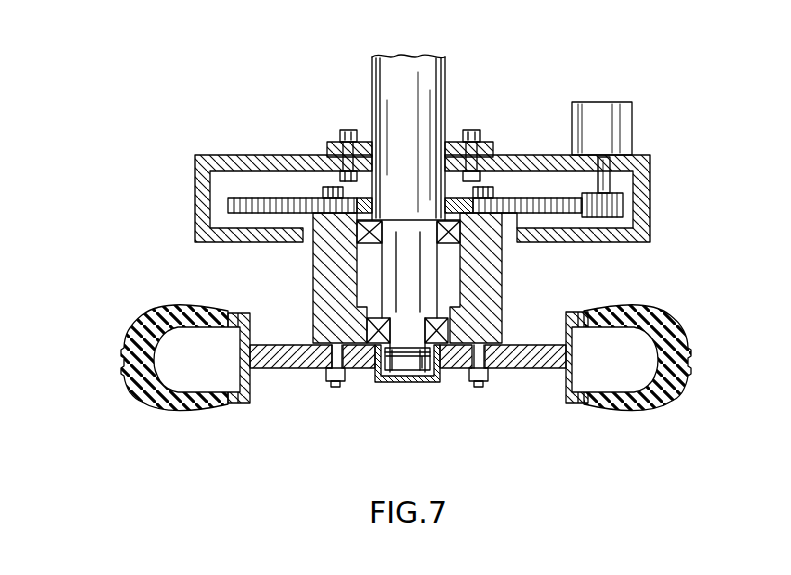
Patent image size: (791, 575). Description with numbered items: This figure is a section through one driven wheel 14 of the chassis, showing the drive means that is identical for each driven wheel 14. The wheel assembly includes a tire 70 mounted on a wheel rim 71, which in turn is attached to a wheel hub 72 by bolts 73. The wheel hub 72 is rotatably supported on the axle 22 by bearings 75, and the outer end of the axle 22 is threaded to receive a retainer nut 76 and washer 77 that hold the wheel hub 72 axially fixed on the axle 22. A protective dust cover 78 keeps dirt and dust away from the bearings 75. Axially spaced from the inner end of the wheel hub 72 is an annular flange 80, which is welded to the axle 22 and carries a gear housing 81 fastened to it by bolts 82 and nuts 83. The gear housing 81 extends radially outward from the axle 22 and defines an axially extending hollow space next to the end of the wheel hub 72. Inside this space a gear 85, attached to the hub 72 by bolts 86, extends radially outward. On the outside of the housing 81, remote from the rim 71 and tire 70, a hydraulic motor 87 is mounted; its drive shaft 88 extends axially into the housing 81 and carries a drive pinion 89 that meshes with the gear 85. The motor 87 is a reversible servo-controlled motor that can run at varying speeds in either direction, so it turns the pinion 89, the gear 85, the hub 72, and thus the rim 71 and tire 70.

The wheel 14 is at (607, 412).
The axle 22 is at (432, 93).
The tire 70 is at (682, 367).
The wheel rim 71 is at (278, 358).
The wheel hub 72 is at (331, 277).
The bolts 73 is at (331, 377).
The bearings 75 is at (447, 324).
The retainer nut 76 is at (423, 363).
The washer 77 is at (407, 377).
The protective dust cover 78 is at (382, 381).
The annular flange 80 is at (327, 147).
The gear housing 81 is at (215, 165).
The bolts 82 is at (347, 131).
The nuts 83 is at (338, 173).
The gear 85 is at (521, 203).
The bolts 86 is at (485, 193).
The hydraulic motor 87 is at (613, 118).
The drive shaft 88 is at (609, 182).
The drive pinion 89 is at (624, 207).